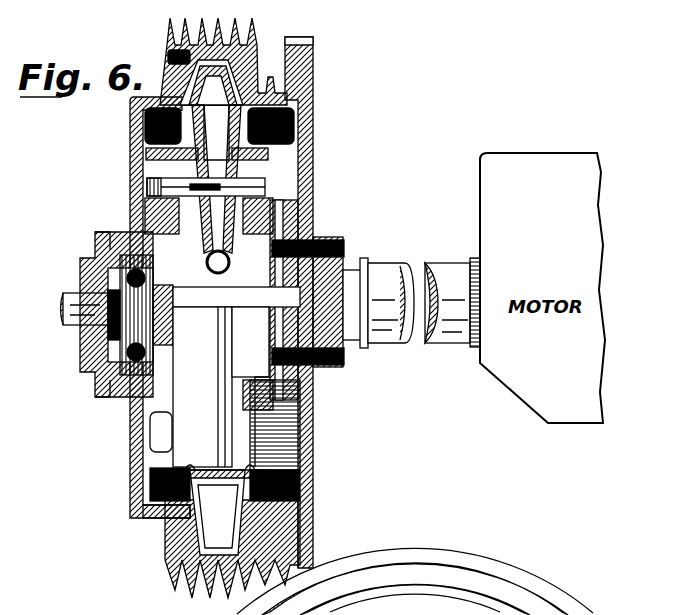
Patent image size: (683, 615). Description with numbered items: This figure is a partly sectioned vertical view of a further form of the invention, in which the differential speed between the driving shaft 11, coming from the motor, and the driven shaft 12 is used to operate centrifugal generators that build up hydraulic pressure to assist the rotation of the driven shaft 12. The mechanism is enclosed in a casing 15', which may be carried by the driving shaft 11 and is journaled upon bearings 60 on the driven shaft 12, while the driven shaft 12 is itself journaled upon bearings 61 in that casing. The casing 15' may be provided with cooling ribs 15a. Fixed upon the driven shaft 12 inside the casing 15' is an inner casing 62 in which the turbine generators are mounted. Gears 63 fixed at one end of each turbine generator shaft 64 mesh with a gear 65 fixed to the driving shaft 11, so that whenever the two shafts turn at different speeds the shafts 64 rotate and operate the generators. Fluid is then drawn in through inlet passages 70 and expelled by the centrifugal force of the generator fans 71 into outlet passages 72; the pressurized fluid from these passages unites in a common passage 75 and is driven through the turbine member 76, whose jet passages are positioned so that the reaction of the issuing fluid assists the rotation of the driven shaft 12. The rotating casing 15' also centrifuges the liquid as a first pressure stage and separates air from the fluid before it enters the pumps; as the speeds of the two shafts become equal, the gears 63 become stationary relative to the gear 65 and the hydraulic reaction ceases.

The driving shaft 11 is at (380, 333).
The driven shaft 12 is at (62, 305).
The casing 15' is at (196, 307).
The cooling ribs 15a is at (192, 28).
The bearings 60 is at (126, 314).
The bearings 61 is at (343, 273).
The casing 62 is at (236, 377).
The gears 63 is at (313, 416).
The turbine generator shaft 64 is at (147, 186).
The gear 65 is at (312, 217).
The inlet passages 70 is at (313, 484).
The generator fans 71 is at (216, 173).
The outlet passages 72 is at (229, 262).
The common passage 75 is at (213, 568).
The turbine member 76 is at (208, 70).